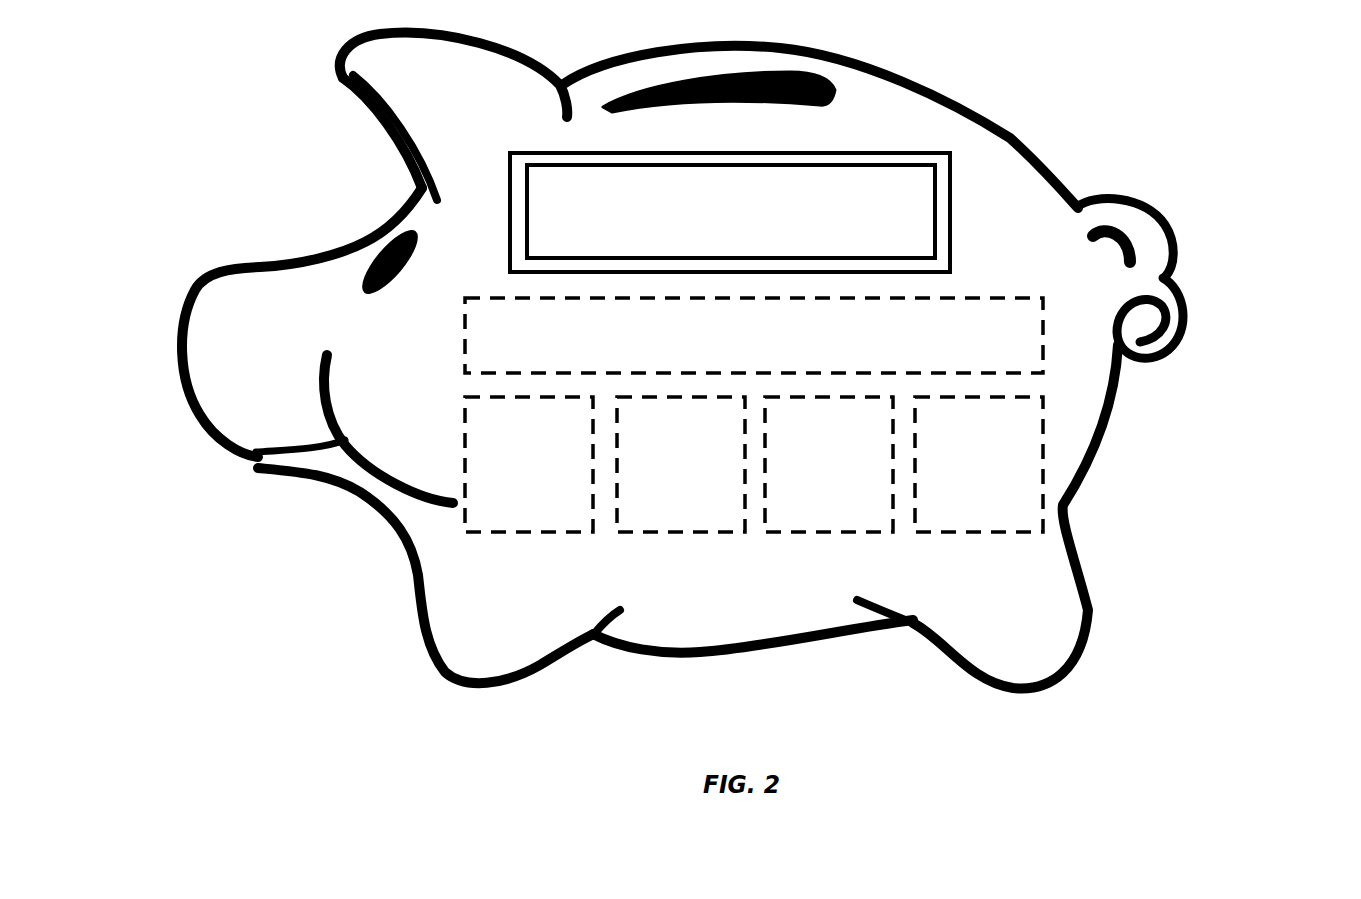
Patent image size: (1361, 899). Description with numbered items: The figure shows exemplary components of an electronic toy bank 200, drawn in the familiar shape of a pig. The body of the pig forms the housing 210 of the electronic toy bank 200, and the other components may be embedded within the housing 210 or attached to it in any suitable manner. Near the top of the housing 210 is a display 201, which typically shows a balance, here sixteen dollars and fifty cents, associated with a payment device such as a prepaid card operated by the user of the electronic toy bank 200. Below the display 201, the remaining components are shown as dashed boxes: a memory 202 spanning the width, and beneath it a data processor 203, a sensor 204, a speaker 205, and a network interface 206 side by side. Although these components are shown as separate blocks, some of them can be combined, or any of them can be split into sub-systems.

The electronic toy bank 200 is at (727, 409).
The display 201 is at (900, 151).
The memory 202 is at (733, 361).
The data processor 203 is at (510, 506).
The sensor 204 is at (662, 492).
The speaker 205 is at (810, 492).
The network interface 206 is at (960, 506).
The housing 210 is at (247, 268).